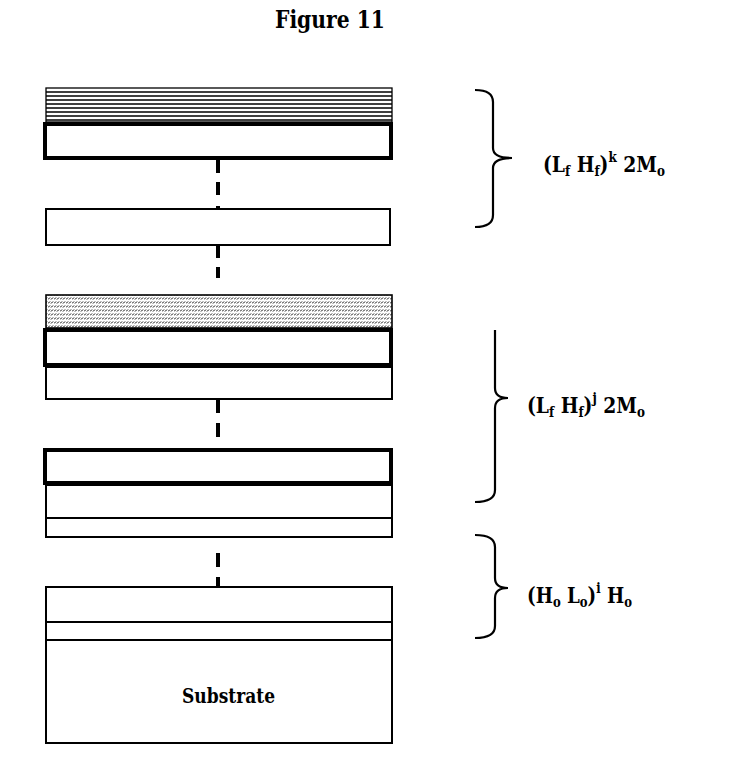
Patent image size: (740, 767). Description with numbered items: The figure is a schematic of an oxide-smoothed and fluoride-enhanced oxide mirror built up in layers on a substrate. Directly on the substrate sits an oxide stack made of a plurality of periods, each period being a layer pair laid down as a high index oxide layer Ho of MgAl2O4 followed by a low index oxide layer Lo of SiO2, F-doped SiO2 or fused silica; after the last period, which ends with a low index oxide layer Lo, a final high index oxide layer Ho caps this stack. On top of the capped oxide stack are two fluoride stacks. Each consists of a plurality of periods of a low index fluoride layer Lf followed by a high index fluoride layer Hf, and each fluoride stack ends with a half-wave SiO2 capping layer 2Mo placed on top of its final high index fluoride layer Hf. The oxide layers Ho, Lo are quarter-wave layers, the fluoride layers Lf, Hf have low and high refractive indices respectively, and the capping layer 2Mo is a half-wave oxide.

The half-wave SiO2 capping layer 2Mo is at (257, 207).
The high index fluoride layer Hf is at (247, 303).
The low index fluoride layer Lf is at (245, 363).
The high index oxide layer Ho is at (248, 589).
The low index oxide layer Lo is at (246, 603).